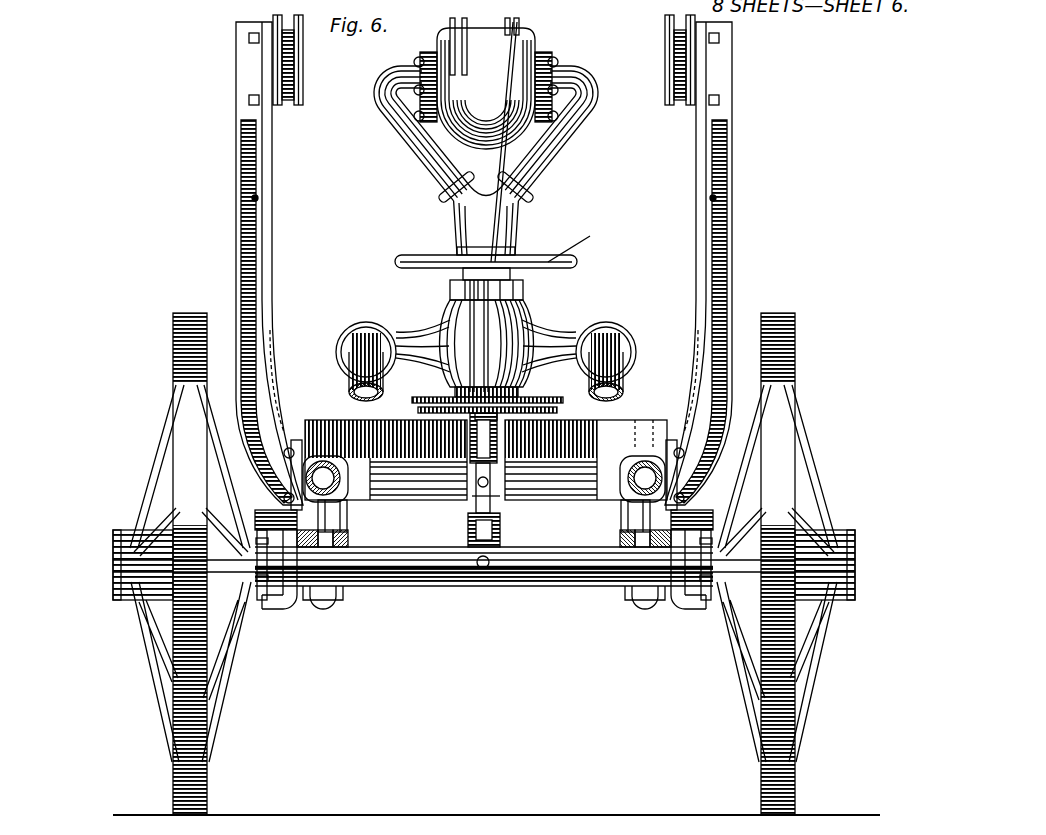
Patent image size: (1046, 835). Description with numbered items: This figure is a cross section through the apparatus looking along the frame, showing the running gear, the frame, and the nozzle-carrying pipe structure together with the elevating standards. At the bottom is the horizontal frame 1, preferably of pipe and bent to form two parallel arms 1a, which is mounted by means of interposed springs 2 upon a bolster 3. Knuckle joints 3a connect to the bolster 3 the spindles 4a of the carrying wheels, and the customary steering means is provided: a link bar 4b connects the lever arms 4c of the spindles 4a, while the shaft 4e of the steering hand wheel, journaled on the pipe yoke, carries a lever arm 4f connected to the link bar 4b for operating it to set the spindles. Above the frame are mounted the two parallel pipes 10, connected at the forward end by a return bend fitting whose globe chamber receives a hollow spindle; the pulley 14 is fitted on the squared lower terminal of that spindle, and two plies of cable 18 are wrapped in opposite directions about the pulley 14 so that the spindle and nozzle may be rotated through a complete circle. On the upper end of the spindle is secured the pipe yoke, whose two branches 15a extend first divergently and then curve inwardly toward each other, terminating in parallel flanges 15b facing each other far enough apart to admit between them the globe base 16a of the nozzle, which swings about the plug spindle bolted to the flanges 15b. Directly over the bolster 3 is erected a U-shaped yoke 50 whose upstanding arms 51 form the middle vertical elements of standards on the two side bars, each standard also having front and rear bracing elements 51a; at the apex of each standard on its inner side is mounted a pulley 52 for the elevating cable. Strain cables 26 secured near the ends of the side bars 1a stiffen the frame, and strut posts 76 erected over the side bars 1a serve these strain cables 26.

The pulley 52 is at (302, 62).
The strain cables 26 is at (260, 198).
The upstanding arms 51 is at (236, 250).
The bracing elements 51a is at (258, 290).
The parallel flanges 15b is at (430, 52).
The globe base 16a is at (507, 30).
The branches 15a is at (410, 152).
The shaft 4e is at (488, 338).
The pulley 14 is at (532, 396).
The cable 18 is at (418, 400).
The parallel pipes 10 is at (352, 372).
The U-shaped yoke 50 is at (596, 440).
The strut posts 76 is at (320, 478).
The parallel arms 1a is at (343, 500).
The horizontal frame structure 1 is at (398, 497).
The lever arm 4f is at (496, 543).
The springs 2 is at (346, 545).
The link bar 4b is at (447, 555).
The bolster 3 is at (517, 567).
The knuckle joints 3a is at (290, 607).
The spindles 4a is at (265, 612).
The lever arm 4c is at (238, 612).